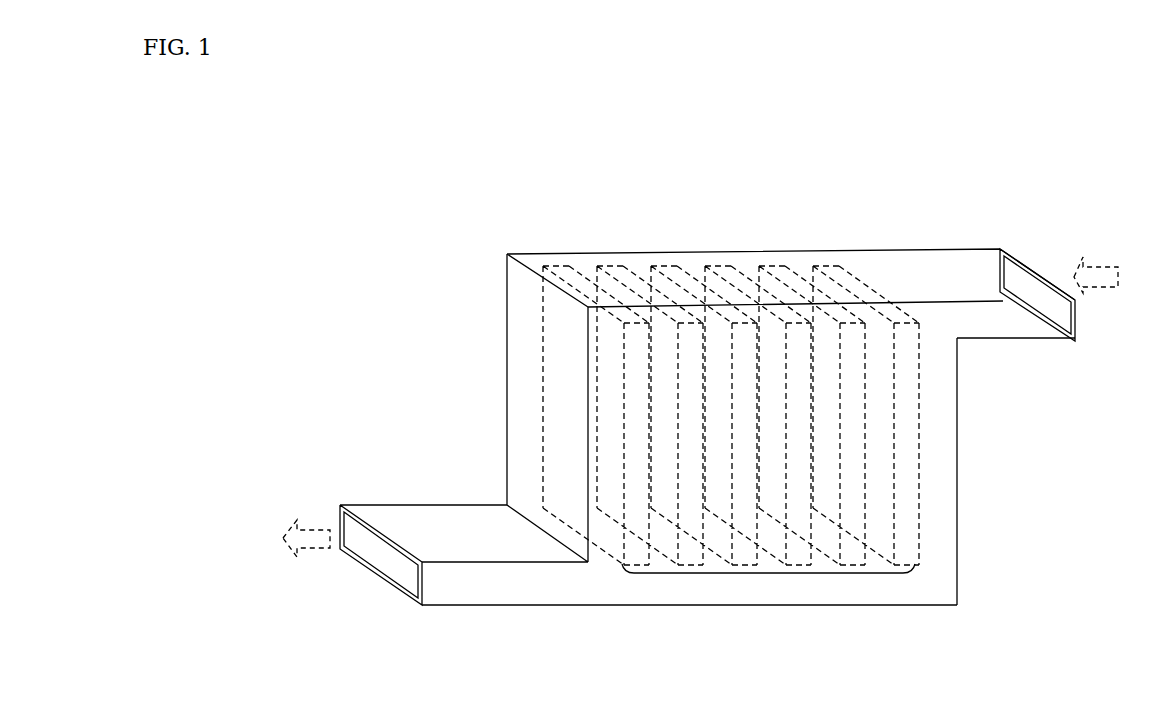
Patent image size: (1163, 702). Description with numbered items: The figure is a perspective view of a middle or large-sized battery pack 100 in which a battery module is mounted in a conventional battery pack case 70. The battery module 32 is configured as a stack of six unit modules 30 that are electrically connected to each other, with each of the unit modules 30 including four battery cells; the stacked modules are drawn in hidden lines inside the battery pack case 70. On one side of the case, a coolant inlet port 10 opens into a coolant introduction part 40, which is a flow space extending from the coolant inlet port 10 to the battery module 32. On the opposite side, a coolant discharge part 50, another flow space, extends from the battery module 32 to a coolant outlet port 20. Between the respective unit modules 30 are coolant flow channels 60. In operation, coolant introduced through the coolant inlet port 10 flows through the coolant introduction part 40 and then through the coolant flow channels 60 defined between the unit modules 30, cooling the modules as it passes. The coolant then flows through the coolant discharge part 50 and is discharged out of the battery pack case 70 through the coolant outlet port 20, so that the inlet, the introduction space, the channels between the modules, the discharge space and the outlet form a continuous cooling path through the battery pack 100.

The middle or large-sized battery pack 100 is at (365, 155).
The coolant inlet port 10 is at (1012, 272).
The coolant outlet port 20 is at (376, 559).
The unit module 30 is at (910, 472).
The battery module 32 is at (768, 581).
The coolant introduction part 40 is at (937, 314).
The coolant discharge part 50 is at (643, 585).
The coolant flow channel 60 is at (875, 321).
The battery pack case 70 is at (641, 242).